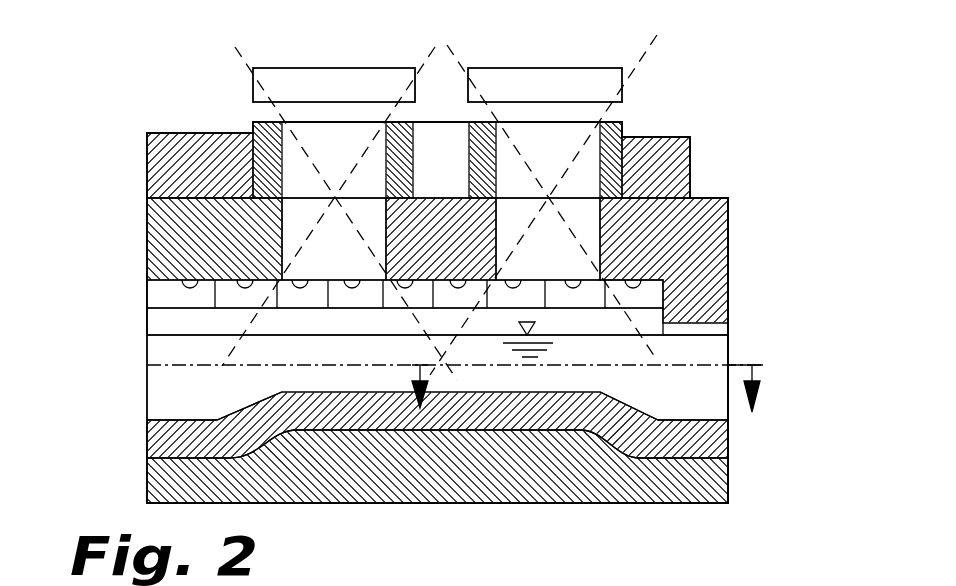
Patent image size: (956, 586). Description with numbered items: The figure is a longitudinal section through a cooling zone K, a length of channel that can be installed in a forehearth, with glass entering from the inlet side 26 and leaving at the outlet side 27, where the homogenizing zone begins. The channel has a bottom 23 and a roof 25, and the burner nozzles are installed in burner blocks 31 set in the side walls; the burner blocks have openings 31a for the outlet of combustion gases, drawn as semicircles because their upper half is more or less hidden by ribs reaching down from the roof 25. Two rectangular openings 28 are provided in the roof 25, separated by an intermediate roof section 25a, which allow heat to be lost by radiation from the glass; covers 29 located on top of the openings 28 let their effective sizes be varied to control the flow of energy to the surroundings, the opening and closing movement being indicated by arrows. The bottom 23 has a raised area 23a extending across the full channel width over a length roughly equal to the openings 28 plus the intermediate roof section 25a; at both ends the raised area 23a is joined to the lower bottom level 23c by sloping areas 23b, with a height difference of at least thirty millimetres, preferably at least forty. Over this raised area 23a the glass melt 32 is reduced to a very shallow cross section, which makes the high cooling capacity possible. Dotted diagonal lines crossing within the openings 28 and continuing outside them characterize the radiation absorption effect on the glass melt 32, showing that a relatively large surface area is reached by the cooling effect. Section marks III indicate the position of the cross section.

The cooling zone K is at (762, 177).
The bottom 23 is at (587, 488).
The raised area 23a is at (325, 386).
The sloping areas 23b is at (242, 401).
The lower bottom level 23c is at (180, 412).
The roof 25 is at (152, 240).
The intermediate roof section 25a is at (437, 220).
The inlet side 26 is at (146, 365).
The outlet side 27 is at (733, 347).
The openings 28 is at (348, 265).
The covers 29 is at (330, 72).
The burner blocks 31 is at (162, 296).
The openings 31a is at (308, 298).
The glass melt 32 is at (165, 350).
The section line III- III is at (591, 380).